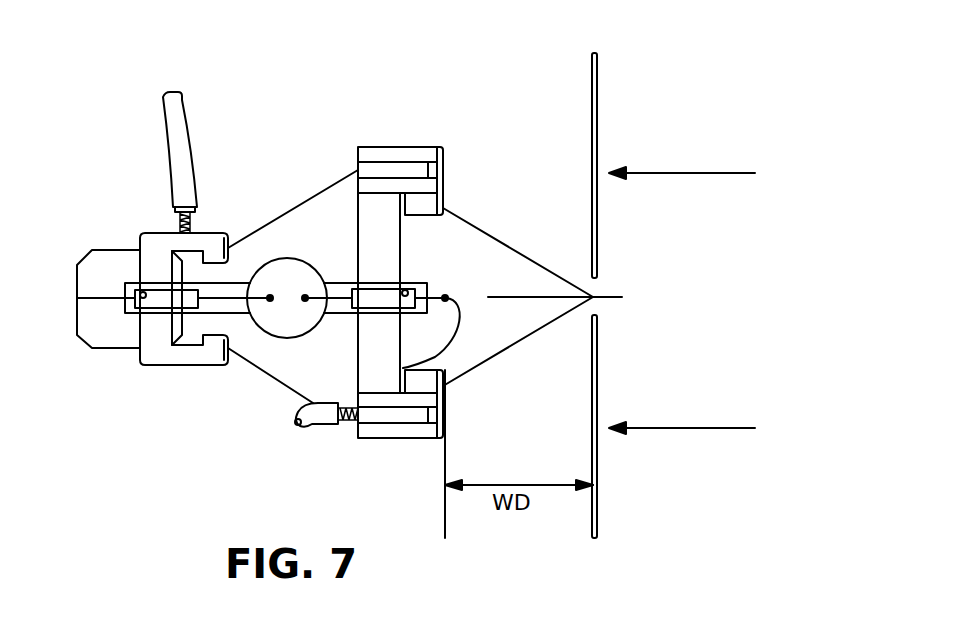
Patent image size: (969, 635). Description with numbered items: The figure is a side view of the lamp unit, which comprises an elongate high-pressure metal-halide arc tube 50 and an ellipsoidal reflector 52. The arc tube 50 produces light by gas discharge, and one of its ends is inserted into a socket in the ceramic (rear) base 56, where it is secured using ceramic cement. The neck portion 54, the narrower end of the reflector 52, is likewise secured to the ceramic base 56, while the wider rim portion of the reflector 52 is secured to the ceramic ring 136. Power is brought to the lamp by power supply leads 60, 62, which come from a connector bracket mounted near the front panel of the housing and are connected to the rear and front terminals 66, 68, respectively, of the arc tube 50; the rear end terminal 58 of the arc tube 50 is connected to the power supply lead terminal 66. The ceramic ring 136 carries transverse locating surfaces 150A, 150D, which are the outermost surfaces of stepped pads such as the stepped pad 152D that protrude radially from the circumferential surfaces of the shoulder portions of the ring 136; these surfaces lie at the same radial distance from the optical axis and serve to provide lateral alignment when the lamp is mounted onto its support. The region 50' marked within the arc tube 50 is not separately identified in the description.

The arc tube 50 is at (286, 188).
The lamp arc / filament region 50' is at (262, 163).
The reflector 52 is at (262, 228).
The neck portion 54 is at (243, 358).
The ceramic base 56 is at (187, 356).
The rear end terminal 58 is at (142, 297).
The power supply lead 60 is at (316, 424).
The power supply lead 62 is at (175, 120).
The rear terminal 66 is at (178, 223).
The front terminal 68 is at (350, 425).
The ceramic ring 136 is at (382, 147).
The transverse locating surface 150A is at (433, 168).
The transverse locating surface 150D is at (437, 415).
The stepped pad 152D is at (444, 188).